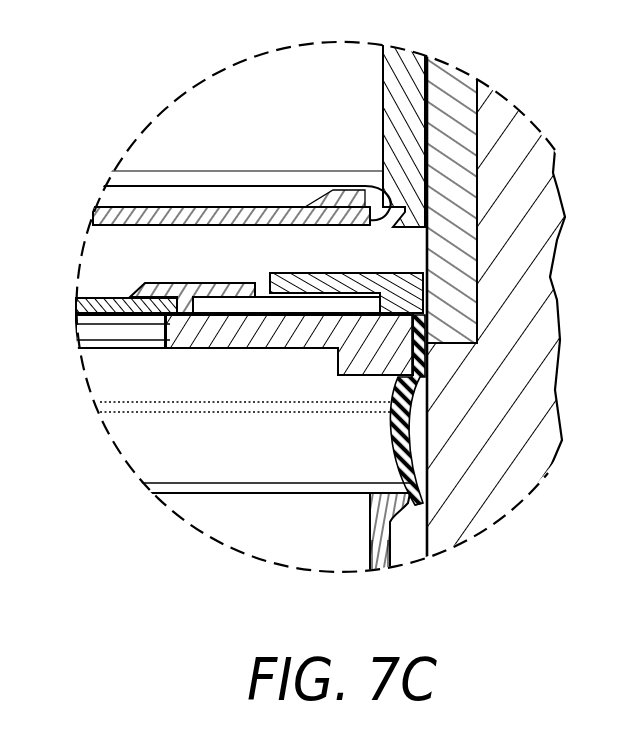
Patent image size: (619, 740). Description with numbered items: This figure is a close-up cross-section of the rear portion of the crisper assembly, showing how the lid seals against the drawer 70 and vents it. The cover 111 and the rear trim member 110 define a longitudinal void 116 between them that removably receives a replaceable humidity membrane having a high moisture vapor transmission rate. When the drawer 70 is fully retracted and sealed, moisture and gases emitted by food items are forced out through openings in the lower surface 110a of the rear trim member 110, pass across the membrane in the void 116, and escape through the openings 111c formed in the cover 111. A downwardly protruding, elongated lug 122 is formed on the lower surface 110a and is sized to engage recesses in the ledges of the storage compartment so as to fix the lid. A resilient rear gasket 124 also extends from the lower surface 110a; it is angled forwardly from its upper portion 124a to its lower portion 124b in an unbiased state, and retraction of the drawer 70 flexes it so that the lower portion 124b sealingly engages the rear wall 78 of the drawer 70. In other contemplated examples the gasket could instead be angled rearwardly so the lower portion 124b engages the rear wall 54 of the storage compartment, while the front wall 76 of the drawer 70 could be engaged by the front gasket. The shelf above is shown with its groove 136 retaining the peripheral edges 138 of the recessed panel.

The rear wall of the storage compartment 54 is at (453, 450).
The drawer 70 is at (362, 554).
The front wall of the drawer 76 is at (378, 513).
The rear wall of the drawer 78 is at (363, 501).
The rear trim member 110 is at (305, 349).
The lower surface of the rear trim member 110a is at (230, 349).
The cover 111 is at (370, 272).
The openings in the cover 111c is at (268, 273).
The longitudinal void 116 is at (293, 307).
The lug 122 is at (338, 364).
The rear gasket 124 is at (459, 482).
The upper portion of the rear gasket 124a is at (425, 392).
The lower portion of the rear gasket 124b is at (425, 507).
The groove 136 is at (383, 181).
The peripheral edges of the panel 138 is at (231, 183).